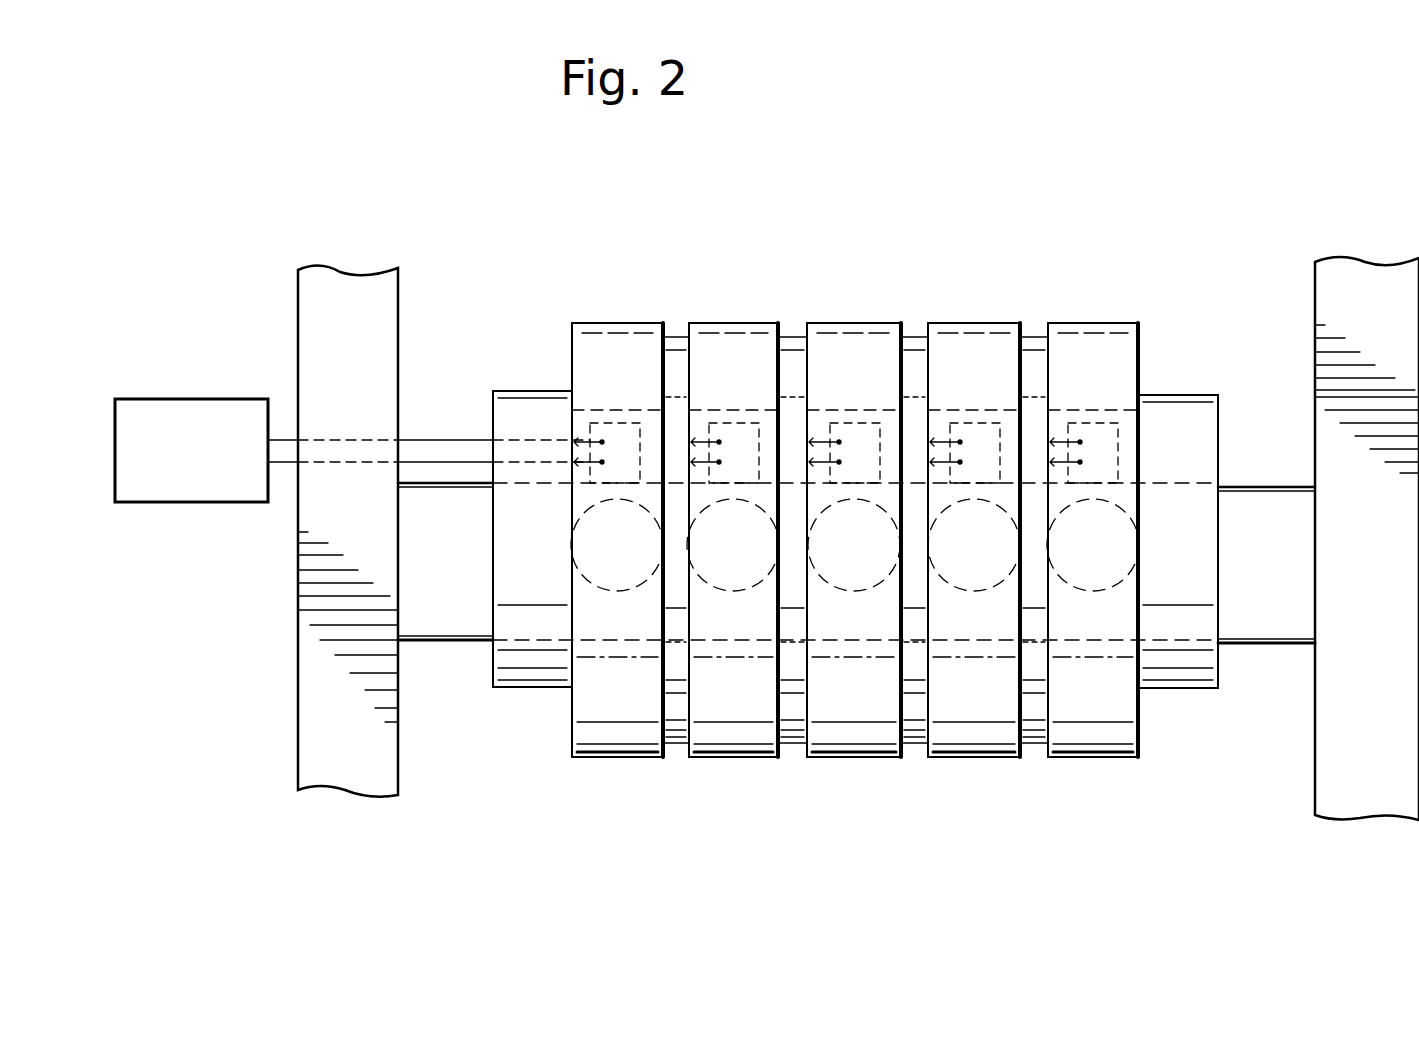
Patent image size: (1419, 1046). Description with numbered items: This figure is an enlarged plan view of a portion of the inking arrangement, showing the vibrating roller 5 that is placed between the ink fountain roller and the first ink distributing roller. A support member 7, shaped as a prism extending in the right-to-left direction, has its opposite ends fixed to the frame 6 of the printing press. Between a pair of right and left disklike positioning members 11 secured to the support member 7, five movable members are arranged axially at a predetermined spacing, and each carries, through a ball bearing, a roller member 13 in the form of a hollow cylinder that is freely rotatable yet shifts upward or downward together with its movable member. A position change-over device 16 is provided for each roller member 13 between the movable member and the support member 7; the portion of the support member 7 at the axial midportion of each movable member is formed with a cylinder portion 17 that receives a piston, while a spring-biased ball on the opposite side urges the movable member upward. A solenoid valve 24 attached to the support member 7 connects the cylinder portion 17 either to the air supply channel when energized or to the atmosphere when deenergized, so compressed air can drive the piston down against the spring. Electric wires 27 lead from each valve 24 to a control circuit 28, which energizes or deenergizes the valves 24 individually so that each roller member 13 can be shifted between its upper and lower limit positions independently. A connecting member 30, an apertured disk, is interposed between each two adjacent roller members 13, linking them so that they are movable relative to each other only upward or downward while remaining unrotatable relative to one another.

The vibrating roller 5 is at (730, 318).
The frame 6 is at (298, 755).
The support member 7 is at (1260, 645).
The positioning member 11 is at (517, 687).
The roller member 13 is at (612, 757).
The position change-over device 16 is at (638, 423).
The cylinder portion 17 is at (618, 586).
The solenoid valve 24 is at (600, 425).
The electric wires 27 is at (287, 440).
The control circuit 28 is at (203, 503).
The connecting member 30 is at (668, 743).